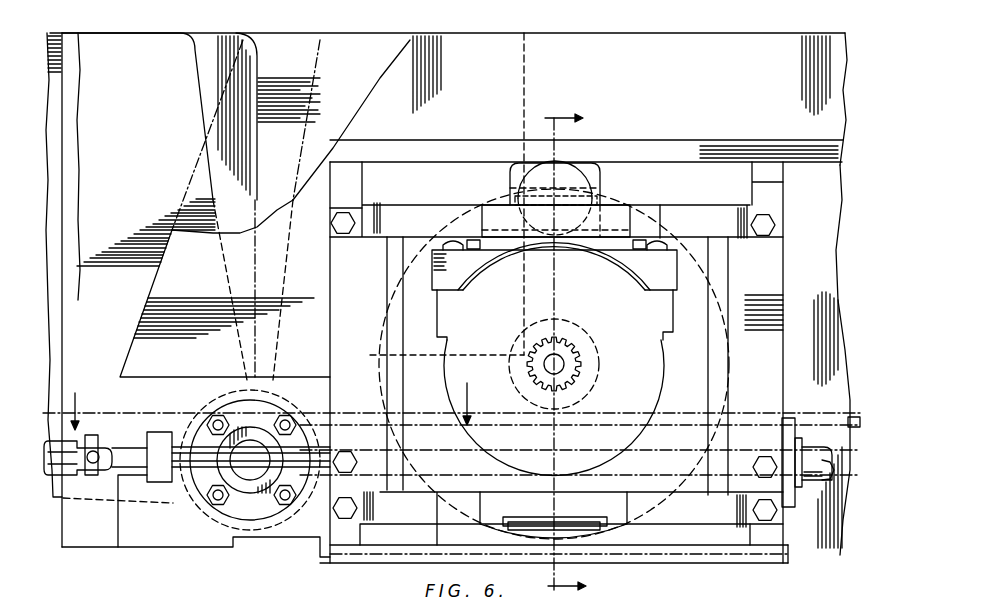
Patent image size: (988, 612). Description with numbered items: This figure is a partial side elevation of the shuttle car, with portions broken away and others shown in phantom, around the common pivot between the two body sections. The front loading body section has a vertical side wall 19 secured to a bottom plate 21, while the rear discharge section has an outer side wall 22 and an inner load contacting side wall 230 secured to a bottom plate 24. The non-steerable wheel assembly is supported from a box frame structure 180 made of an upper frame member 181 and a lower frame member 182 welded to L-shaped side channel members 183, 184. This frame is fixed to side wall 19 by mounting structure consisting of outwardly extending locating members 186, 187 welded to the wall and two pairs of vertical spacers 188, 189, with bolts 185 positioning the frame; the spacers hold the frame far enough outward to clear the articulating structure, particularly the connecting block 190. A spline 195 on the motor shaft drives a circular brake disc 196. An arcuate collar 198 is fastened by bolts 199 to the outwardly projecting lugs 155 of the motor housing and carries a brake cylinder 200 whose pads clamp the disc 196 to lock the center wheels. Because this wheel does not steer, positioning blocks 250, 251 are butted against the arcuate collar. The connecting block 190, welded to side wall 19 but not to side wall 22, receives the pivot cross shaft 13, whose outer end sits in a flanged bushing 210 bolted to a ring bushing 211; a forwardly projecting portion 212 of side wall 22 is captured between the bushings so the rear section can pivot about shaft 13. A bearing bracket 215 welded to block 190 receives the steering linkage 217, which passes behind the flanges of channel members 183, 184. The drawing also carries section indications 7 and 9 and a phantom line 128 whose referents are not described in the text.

The outer side wall 22 is at (204, 58).
The inner load contacting side wall 230 is at (262, 58).
The side wall 19 is at (304, 171).
The axis line 128 is at (538, 48).
The locating member 187 is at (500, 131).
The vertical spacer 188 is at (350, 172).
The box frame structure 180 is at (696, 215).
The L-shaped side channel member 183 is at (354, 232).
The bolt 185 is at (355, 200).
The upper frame member 181 is at (690, 218).
The vertical spacer 189 is at (778, 194).
The L-shaped side channel member 184 is at (786, 272).
The positioning block 251 is at (702, 252).
The brake cylinder 200 is at (532, 184).
The bolt 199 is at (450, 242).
The positioning block 250 is at (418, 278).
The arcuate collar 198 is at (638, 275).
The outwardly projecting ear or lug 155 is at (440, 318).
The spline 195 is at (566, 362).
The section line 9- 9 is at (572, 353).
The section line 7- 7 is at (272, 393).
The connecting block 190 is at (157, 273).
The forwardly projecting portion 212 is at (324, 380).
The bottom plate 24 is at (52, 436).
The bearing bracket 215 is at (164, 430).
The steering linkage 217 is at (73, 462).
The pivot cross shaft 13 is at (252, 478).
The flanged bushing 210 is at (242, 402).
The ring bushing 211 is at (266, 514).
The circular brake disc 196 is at (424, 488).
The locating member 186 is at (424, 555).
The lower frame member 182 is at (706, 516).
The bottom plate 21 is at (815, 413).